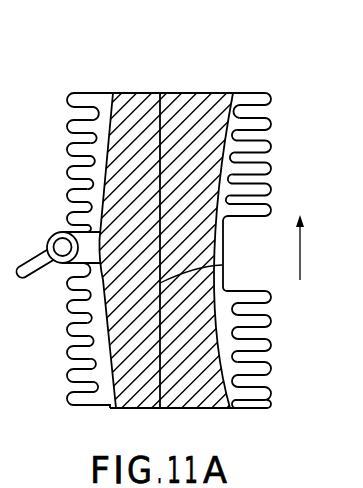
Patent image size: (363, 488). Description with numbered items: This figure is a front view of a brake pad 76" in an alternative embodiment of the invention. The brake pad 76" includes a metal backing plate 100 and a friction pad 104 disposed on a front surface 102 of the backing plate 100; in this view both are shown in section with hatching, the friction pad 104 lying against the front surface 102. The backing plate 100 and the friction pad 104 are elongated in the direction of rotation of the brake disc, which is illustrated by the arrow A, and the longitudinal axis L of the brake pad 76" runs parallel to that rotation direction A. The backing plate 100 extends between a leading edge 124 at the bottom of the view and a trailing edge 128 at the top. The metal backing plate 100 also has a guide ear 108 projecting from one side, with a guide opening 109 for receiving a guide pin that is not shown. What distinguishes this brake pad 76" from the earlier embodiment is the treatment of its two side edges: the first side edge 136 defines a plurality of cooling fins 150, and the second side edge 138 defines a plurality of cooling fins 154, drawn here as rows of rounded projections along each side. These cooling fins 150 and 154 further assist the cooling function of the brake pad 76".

The brake pad 76 is at (155, 66).
The metal backing plate 100 is at (112, 91).
The friction pad 104 is at (187, 166).
The trailing edge 128 is at (185, 93).
The leading edge 124 is at (178, 410).
The second side edge 138 is at (61, 250).
The cooling fins 154 is at (72, 181).
The guide ear 108 is at (47, 255).
The guide opening 109 is at (50, 277).
The first side edge 136 is at (280, 246).
The cooling fins 150 is at (272, 152).
The front surface 102 is at (221, 206).
The longitudinal axis L is at (222, 265).
The arrow A is at (309, 247).